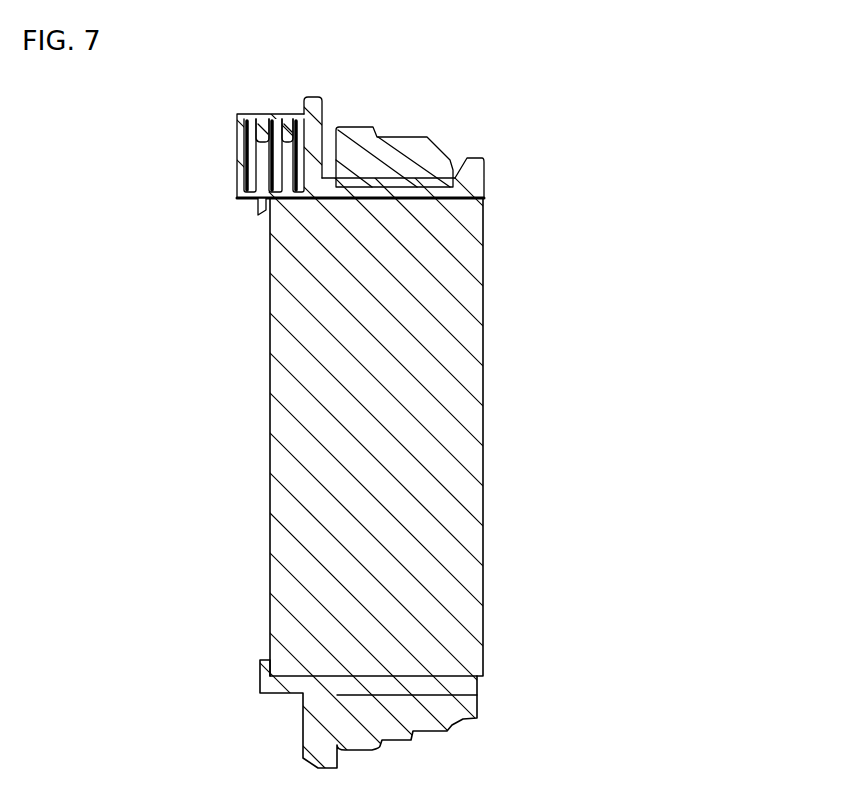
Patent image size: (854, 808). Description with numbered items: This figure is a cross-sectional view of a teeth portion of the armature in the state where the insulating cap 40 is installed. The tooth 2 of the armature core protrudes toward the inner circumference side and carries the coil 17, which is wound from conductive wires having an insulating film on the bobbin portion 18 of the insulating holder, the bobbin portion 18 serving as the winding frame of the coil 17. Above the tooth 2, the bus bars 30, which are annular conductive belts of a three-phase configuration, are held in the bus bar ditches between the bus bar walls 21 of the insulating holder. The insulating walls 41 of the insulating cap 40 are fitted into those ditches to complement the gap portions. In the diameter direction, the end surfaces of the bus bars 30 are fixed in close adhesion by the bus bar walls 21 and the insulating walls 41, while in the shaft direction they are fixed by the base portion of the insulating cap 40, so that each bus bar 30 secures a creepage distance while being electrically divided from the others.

The teeth 2 is at (475, 418).
The coil 17 is at (405, 152).
The bobbin portion 18 is at (465, 187).
The bus bar walls 21 is at (284, 155).
The bus bars 30 is at (250, 177).
The insulating cap 40 is at (273, 121).
The insulating walls 41 is at (290, 141).